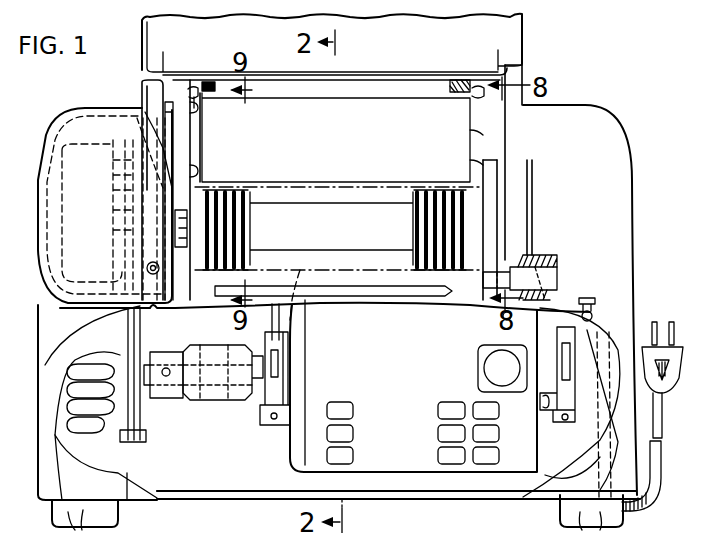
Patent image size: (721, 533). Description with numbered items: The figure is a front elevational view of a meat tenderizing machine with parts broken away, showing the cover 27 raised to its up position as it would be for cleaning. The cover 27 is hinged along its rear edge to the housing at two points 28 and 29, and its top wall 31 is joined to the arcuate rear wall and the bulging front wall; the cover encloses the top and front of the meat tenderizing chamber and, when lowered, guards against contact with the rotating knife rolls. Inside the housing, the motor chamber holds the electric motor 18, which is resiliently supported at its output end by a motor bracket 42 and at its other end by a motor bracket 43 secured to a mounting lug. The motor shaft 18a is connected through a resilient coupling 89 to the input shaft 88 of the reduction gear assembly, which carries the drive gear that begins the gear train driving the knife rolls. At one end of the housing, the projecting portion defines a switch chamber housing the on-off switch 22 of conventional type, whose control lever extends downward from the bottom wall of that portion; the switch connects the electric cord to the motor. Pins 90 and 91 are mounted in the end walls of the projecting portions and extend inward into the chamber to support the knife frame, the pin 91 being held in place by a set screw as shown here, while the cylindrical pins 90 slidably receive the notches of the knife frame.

The cover 27 is at (526, 30).
The hinge 28 is at (203, 93).
The hinge 29 is at (467, 93).
The motor bracket 42 is at (272, 322).
The pin 91 is at (527, 270).
The motor bracket 43 is at (570, 313).
The on-off switch 22 is at (597, 302).
The pin 90 is at (185, 284).
The input shaft 88 is at (163, 398).
The resilient coupling 89 is at (217, 396).
The motor shaft 18a is at (257, 400).
The electric motor 18 is at (410, 473).
The top wall 31 is at (218, 532).